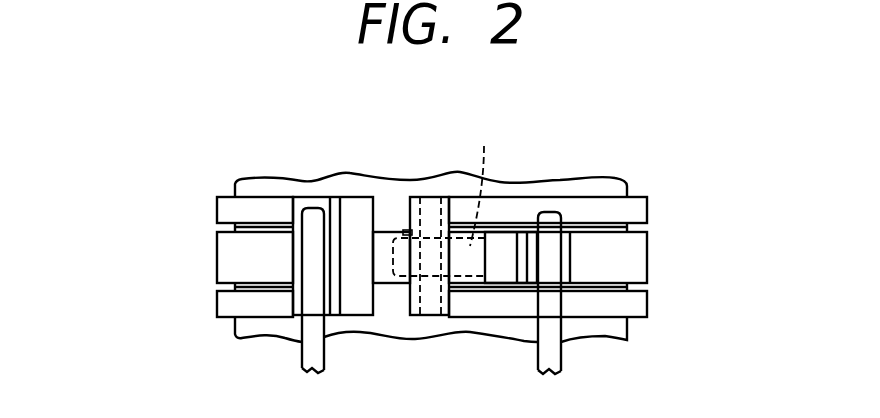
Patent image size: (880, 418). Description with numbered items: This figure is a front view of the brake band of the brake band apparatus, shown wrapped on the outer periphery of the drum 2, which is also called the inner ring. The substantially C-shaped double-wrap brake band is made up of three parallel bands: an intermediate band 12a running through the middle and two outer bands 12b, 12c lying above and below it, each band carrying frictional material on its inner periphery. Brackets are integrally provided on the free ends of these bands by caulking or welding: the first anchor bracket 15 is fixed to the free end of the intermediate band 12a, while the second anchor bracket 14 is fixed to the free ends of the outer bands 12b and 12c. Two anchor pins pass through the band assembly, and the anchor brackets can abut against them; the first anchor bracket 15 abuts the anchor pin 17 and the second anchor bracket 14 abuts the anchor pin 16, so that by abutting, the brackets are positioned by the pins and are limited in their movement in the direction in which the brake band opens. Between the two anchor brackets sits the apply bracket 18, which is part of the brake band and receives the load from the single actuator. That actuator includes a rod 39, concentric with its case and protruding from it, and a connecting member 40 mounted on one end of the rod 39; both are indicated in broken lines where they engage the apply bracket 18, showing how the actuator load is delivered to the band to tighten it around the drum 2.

The drum 2 is at (617, 186).
The intermediate band 12a is at (633, 260).
The outer band 12b is at (220, 210).
The outer band 12c is at (220, 303).
The second anchor bracket 14 is at (299, 203).
The first anchor bracket 15 is at (567, 220).
The anchor pin 16 is at (306, 360).
The anchor pin 17 is at (550, 362).
The apply bracket 18 is at (431, 205).
The rod 39 is at (478, 182).
The connecting member 40 is at (410, 229).